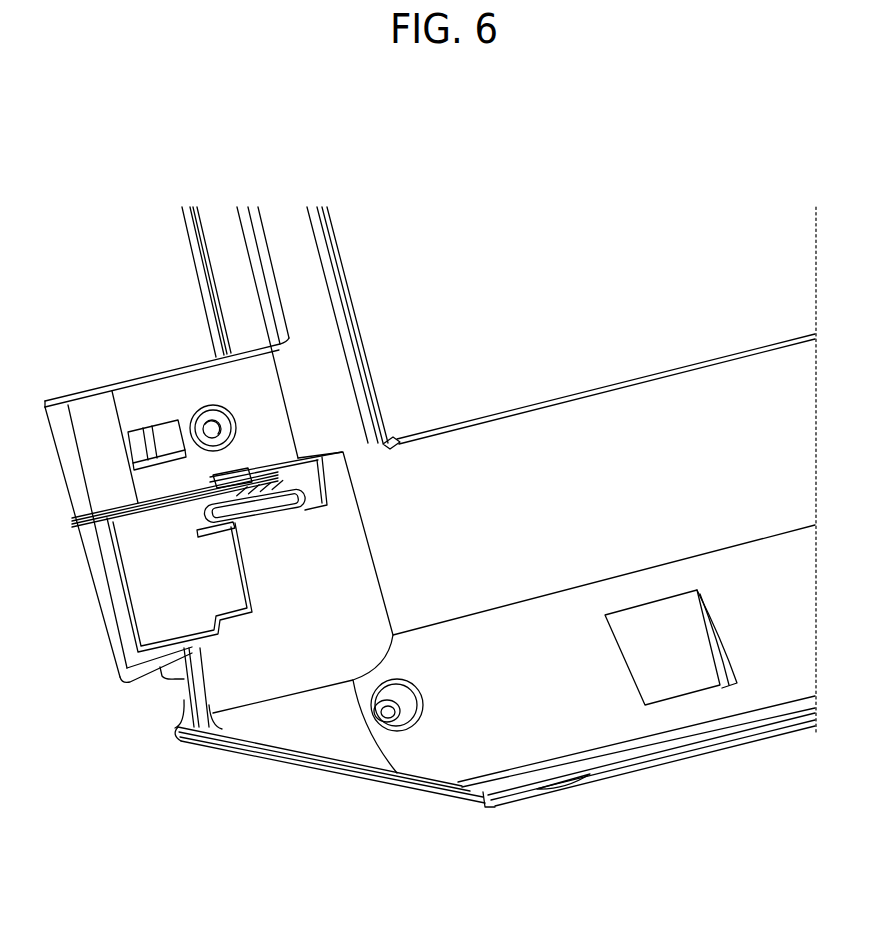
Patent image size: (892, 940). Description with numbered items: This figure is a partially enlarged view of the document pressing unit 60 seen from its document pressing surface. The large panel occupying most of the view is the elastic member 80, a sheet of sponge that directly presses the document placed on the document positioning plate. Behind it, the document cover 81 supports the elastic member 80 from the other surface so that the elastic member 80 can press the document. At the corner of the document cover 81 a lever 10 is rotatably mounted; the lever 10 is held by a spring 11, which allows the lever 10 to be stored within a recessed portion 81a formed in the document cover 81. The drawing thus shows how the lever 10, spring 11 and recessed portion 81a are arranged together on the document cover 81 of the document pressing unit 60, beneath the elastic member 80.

The lever 10 is at (262, 503).
The spring 11 is at (162, 513).
The document pressing unit 60 is at (360, 785).
The elastic member 80 is at (462, 305).
The document cover 81 is at (527, 653).
The recessed portion 81a is at (275, 408).